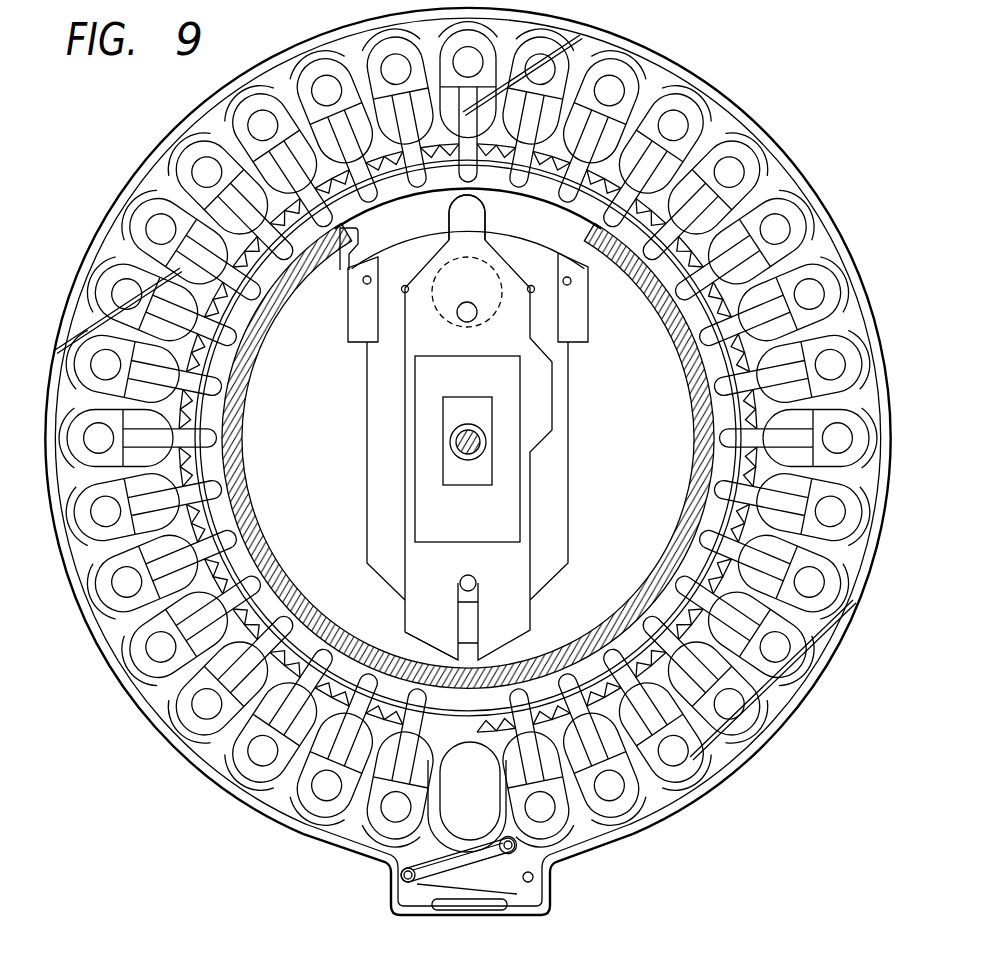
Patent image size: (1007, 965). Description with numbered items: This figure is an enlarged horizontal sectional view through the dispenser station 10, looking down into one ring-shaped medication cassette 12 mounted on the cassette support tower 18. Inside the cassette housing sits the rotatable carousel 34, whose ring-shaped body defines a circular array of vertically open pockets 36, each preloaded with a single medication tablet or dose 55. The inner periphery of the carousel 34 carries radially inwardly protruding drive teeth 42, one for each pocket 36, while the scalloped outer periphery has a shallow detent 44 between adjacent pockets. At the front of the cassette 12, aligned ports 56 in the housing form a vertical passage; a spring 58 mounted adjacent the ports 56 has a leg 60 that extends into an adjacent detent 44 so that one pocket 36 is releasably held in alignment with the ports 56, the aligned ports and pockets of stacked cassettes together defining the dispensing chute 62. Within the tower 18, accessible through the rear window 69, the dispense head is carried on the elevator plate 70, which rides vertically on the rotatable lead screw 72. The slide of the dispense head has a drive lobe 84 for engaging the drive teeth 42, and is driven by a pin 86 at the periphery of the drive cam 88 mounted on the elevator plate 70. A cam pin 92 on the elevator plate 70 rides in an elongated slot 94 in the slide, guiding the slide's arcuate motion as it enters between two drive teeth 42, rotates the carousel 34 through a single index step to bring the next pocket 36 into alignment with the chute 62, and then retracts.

The medication cassette 12 is at (801, 120).
The carousel 34 is at (736, 752).
The pockets 36 is at (792, 632).
The medication tablet 55 is at (780, 657).
The cassette support tower 18 is at (703, 468).
The window 69 is at (345, 262).
The drive teeth 42 is at (409, 183).
The drive lobe 84 is at (473, 226).
The drive cam 88 is at (512, 264).
The pin 86 is at (472, 320).
The elevator plate 70 is at (571, 476).
The lead screw 72 is at (470, 452).
The cam pin 92 is at (476, 585).
The elongated slot 94 is at (448, 650).
The dispensing chute 62 is at (455, 812).
The ports 56 is at (452, 830).
The detent 44 is at (521, 849).
The spring 58 is at (393, 867).
The leg 60 is at (450, 864).
The dispenser station 10 is at (295, 562).